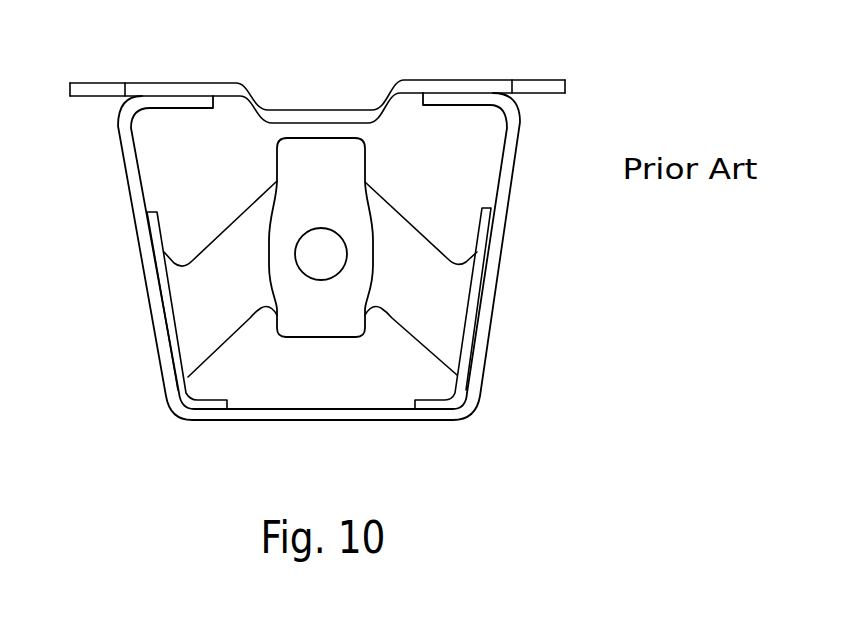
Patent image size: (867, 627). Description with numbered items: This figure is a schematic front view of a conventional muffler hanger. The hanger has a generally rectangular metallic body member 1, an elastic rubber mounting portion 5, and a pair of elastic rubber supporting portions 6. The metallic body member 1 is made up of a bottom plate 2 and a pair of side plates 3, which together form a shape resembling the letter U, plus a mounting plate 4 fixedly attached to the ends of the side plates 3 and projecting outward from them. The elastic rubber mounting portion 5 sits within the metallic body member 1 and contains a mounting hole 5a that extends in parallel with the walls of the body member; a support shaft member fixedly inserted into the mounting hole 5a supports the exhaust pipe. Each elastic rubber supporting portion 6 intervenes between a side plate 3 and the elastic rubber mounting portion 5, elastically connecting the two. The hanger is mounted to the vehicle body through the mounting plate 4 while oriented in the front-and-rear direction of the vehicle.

The metallic body member 1 is at (485, 58).
The bottom plate 2 is at (338, 420).
The side plates 3 is at (147, 283).
The mounting plate 4 is at (194, 82).
The elastic rubber mounting portion 5 is at (348, 337).
The mounting hole 5a is at (311, 277).
The elastic rubber supporting portions 6 is at (235, 220).